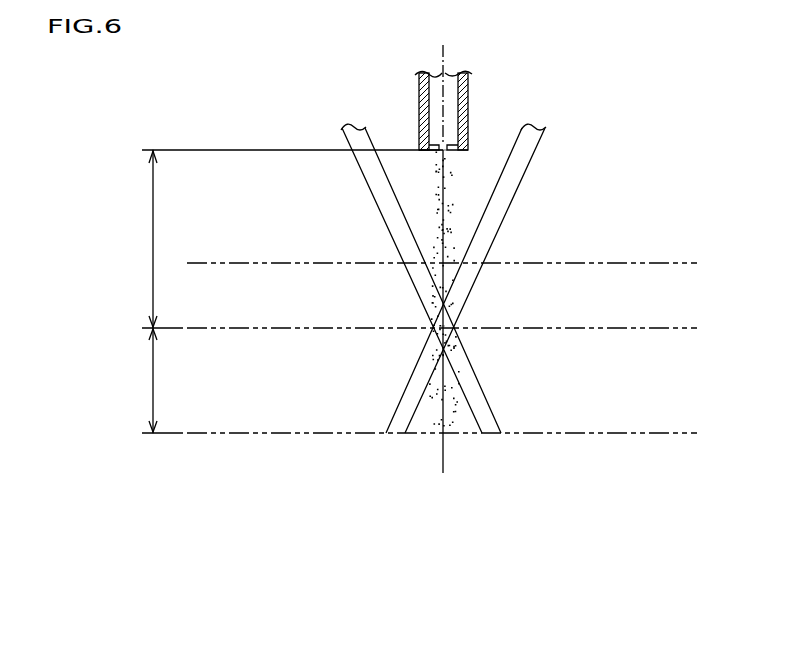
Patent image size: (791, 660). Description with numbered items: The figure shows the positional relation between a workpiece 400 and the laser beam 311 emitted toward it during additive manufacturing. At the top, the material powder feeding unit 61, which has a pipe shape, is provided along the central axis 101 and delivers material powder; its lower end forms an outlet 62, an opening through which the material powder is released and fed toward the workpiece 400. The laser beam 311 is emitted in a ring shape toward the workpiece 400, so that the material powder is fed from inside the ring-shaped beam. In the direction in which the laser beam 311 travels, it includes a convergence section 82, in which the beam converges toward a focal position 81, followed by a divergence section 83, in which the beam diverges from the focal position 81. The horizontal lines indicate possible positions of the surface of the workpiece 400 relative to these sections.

The material powder feeding unit 61 is at (468, 95).
The outlet 62 is at (438, 152).
The central axis 101 is at (440, 188).
The laser beam 311 is at (377, 191).
The focal position 81 is at (458, 325).
The convergence section 82 is at (153, 239).
The divergence section 83 is at (153, 380).
The workpiece 400 is at (670, 263).